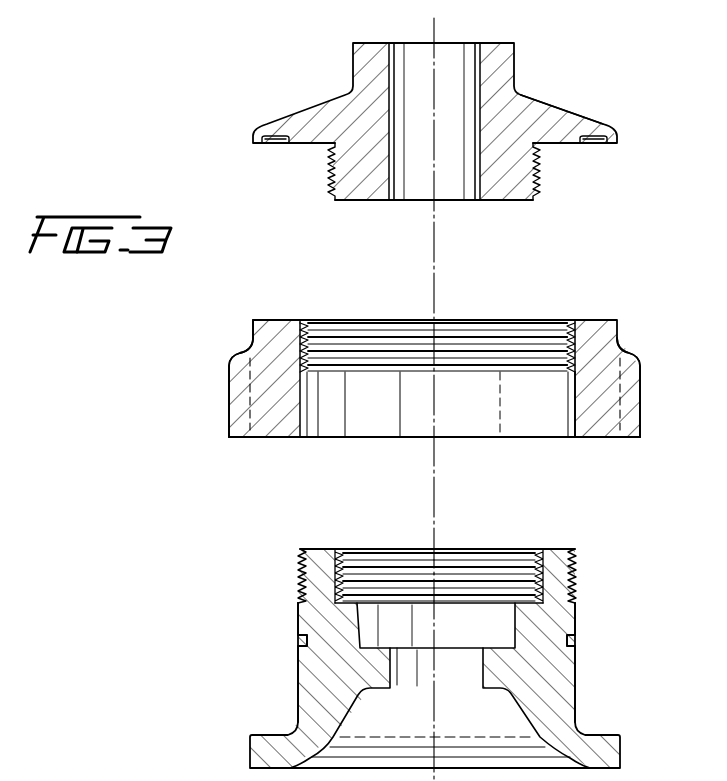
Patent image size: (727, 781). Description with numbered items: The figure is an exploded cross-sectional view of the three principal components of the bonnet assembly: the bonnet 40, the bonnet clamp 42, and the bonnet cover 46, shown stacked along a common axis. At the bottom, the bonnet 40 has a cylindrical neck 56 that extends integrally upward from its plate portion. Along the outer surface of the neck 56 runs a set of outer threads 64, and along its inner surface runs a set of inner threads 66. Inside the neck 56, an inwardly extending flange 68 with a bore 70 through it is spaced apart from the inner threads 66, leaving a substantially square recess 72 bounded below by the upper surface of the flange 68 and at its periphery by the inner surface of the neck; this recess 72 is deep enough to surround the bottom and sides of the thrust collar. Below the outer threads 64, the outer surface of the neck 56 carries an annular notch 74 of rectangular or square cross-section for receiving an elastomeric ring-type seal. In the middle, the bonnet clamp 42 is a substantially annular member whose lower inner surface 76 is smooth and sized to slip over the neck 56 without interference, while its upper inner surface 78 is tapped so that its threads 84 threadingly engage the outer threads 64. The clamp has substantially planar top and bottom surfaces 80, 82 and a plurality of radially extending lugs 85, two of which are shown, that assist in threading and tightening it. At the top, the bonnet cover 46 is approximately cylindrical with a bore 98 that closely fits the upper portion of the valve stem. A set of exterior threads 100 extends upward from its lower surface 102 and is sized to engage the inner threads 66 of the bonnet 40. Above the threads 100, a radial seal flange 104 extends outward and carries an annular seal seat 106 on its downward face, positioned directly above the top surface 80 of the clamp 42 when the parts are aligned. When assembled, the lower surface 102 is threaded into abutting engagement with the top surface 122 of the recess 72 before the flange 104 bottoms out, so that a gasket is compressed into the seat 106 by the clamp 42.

The bonnet 40 is at (298, 673).
The bonnet clamp 42 is at (240, 343).
The bonnet cover 46 is at (302, 106).
The cylindrical neck 56 is at (280, 600).
The set of outer threads 64 is at (577, 587).
The set of inner threads 66 is at (540, 577).
The inwardly extending flange 68 is at (400, 690).
The bore 70 is at (430, 686).
The recess 72 is at (477, 635).
The annular notch 74 is at (577, 640).
The inner surface of the lower portion 76 is at (568, 440).
The inner surface of the upper portion 78 is at (556, 325).
The top surface 80 is at (272, 320).
The bottom surface 82 is at (272, 445).
The threads 84 is at (350, 325).
The radially extending lugs 85 is at (233, 405).
The bore 98 is at (454, 55).
The set of exterior threads 100 is at (540, 186).
The lower surface 102 is at (373, 206).
The radial seal flange 104 is at (560, 113).
The annular seal seat 106 is at (590, 143).
The top surface of recess 122 is at (352, 600).